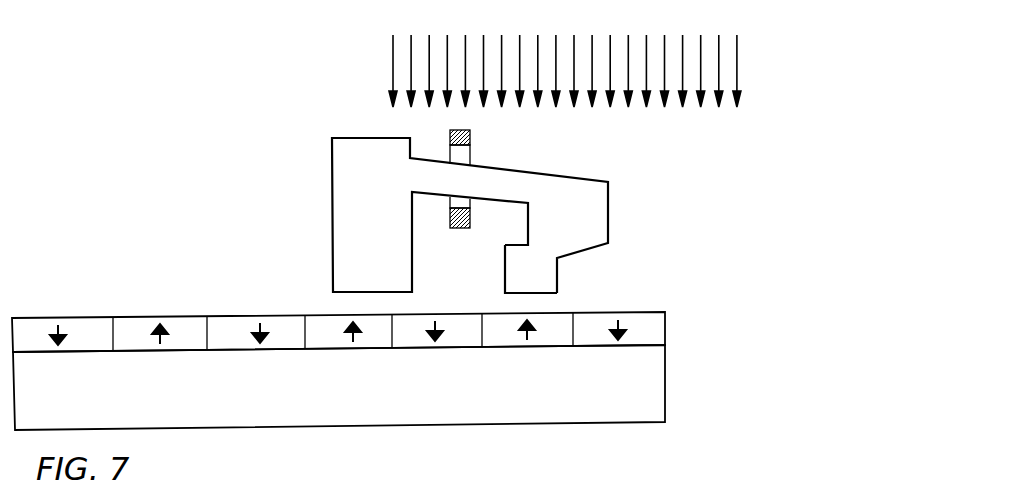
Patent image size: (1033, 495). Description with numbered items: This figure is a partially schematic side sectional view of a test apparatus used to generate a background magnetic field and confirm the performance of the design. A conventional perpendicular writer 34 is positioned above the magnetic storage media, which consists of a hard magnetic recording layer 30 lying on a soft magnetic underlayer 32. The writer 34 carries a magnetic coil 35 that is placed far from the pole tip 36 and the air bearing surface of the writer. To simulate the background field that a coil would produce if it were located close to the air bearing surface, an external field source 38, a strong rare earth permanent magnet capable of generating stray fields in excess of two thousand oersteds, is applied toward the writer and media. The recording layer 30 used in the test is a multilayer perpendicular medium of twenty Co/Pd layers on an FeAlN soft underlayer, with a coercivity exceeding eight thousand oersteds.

The hard magnetic recording layer 30 is at (658, 325).
The soft magnetic underlayer 32 is at (657, 383).
The perpendicular writer 34 is at (322, 208).
The magnetic coil 35 is at (455, 230).
The pole tip 36 is at (510, 280).
The external field source 38 is at (392, 69).